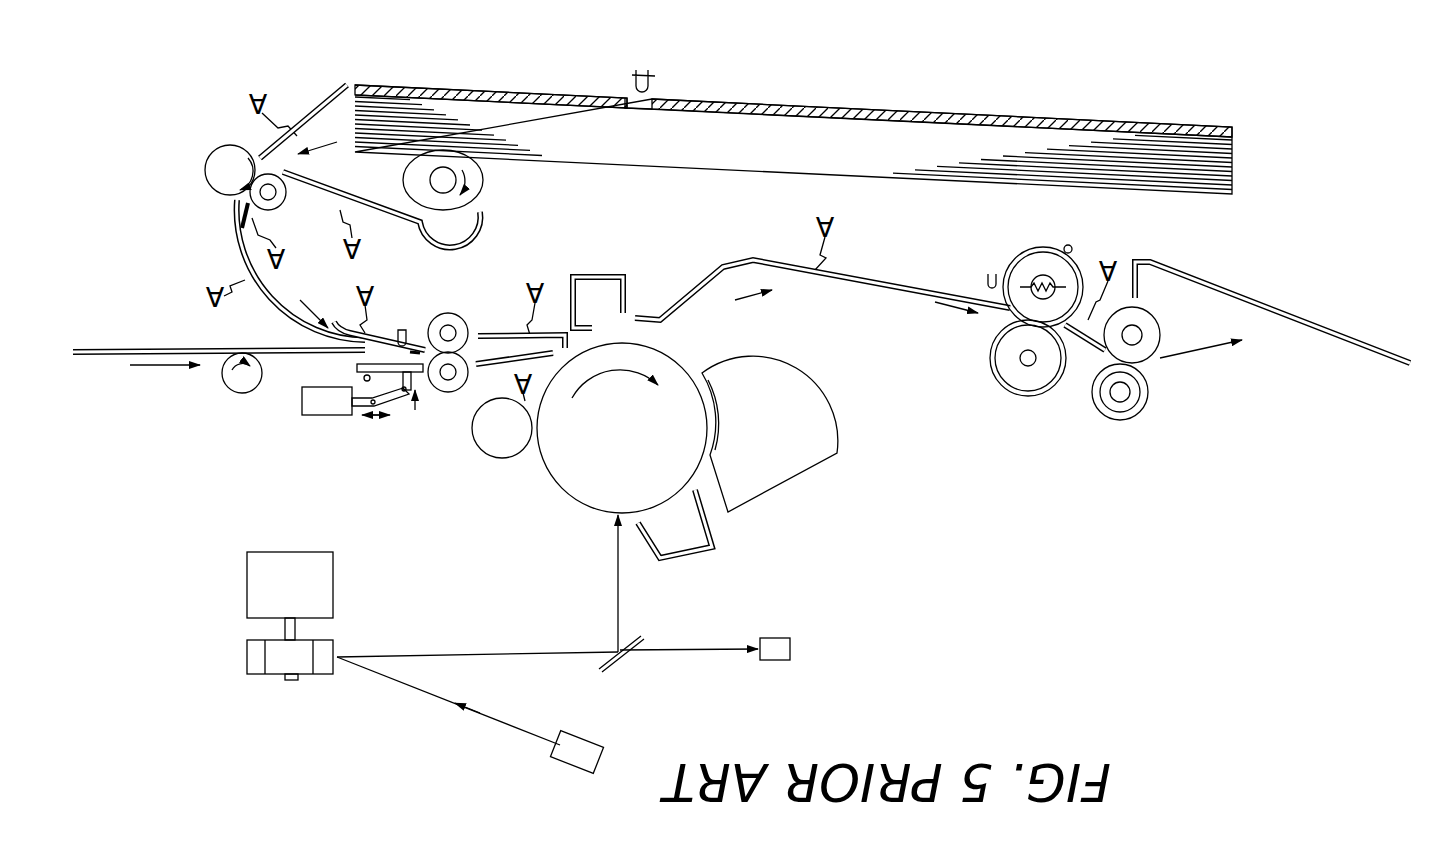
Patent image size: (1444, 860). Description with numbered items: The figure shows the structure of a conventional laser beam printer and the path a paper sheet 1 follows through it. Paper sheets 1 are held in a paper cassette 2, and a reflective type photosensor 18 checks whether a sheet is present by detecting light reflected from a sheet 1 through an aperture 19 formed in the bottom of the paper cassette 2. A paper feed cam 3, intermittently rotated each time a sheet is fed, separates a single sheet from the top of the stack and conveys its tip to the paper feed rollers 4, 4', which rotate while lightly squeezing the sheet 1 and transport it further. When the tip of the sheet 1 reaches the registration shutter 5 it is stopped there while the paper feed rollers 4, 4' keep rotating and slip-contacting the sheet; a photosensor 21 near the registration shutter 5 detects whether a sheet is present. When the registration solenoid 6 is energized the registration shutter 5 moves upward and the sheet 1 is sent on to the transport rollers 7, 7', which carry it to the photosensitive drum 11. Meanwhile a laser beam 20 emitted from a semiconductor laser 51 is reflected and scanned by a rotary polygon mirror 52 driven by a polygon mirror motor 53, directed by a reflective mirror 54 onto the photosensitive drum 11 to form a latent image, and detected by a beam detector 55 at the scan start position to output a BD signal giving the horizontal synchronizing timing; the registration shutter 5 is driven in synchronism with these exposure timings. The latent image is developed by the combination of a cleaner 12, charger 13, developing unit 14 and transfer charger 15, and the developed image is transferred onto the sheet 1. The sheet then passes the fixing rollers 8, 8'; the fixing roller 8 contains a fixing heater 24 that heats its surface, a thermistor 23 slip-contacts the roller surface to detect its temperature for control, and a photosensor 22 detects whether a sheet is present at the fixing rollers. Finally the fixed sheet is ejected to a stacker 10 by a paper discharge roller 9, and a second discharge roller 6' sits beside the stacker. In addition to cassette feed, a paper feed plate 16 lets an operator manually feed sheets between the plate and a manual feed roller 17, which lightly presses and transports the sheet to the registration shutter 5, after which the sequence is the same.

The paper sheet 1 is at (1235, 160).
The paper cassette 2 is at (1080, 118).
The paper feed cam 3 is at (490, 192).
The paper feed roller 4 is at (278, 218).
The paper feed roller 4' is at (204, 181).
The registration shutter 5 is at (418, 345).
The registration solenoid 6 is at (1146, 362).
The discharge roller 6' is at (1114, 417).
The transport roller 7 is at (462, 310).
The transport roller 7' is at (446, 409).
The fixing roller 8 is at (1043, 261).
The fixing roller 8' is at (1008, 362).
The paper discharge roller 9 is at (316, 415).
The stacker 10 is at (1296, 313).
The photosensitive drum 11 is at (565, 490).
The cleaner 12 is at (790, 485).
The charger 13 is at (690, 560).
The developing unit 14 is at (490, 457).
The transfer charger 15 is at (600, 276).
The paper feed plate 16 is at (138, 347).
The manual feed roller 17 is at (242, 393).
The reflective type photosensor 18 is at (646, 72).
The aperture 19 is at (625, 98).
The laser beam 20 is at (443, 655).
The photosensor 21 is at (400, 328).
The photosensor 22 is at (985, 282).
The thermistor 23 is at (1075, 251).
The fixing heater 24 is at (1012, 268).
The semiconductor laser 51 is at (565, 768).
The rotary polygon mirror 52 is at (255, 675).
The polygon mirror motor 53 is at (275, 551).
The reflective mirror 54 is at (605, 670).
The beam detector 55 is at (772, 660).